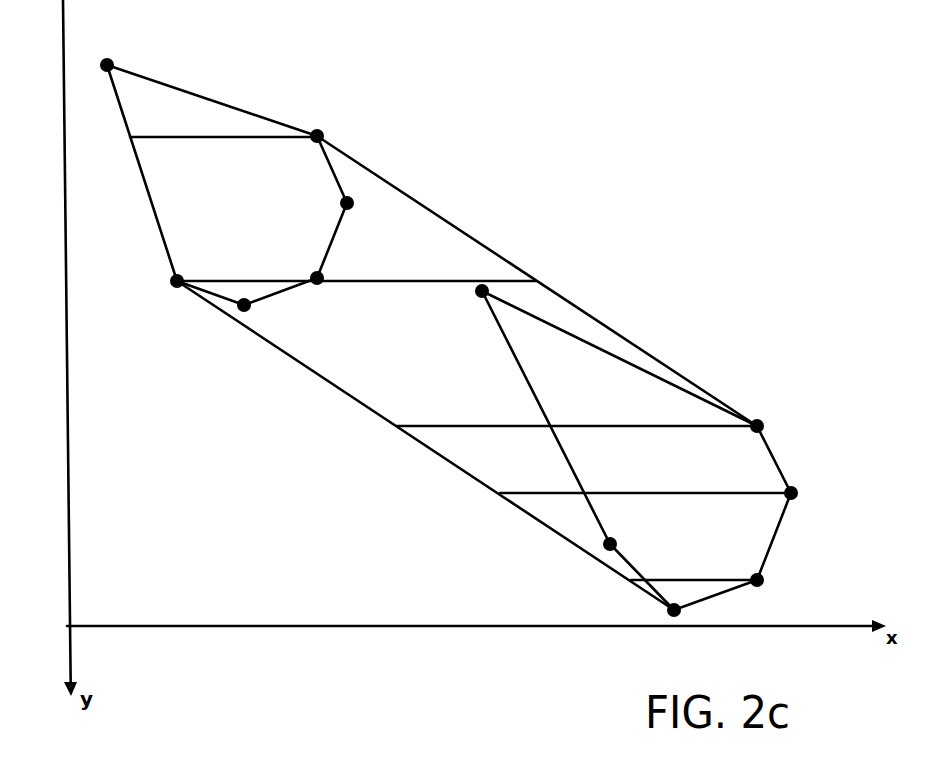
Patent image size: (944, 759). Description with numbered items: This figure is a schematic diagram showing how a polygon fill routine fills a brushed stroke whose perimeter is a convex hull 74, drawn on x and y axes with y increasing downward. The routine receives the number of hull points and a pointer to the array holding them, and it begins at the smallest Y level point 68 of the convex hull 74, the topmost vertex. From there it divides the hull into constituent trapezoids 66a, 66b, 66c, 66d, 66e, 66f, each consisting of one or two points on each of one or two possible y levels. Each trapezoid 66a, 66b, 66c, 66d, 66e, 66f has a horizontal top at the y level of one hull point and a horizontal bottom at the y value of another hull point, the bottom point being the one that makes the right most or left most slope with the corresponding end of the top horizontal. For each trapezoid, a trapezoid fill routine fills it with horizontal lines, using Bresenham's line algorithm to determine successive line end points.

The convex hull 74 is at (516, 93).
The smallest Y level point 68 is at (112, 60).
The trapezoid 66a is at (237, 108).
The trapezoid 66b is at (468, 234).
The trapezoid 66c is at (652, 357).
The trapezoid 66d is at (778, 465).
The trapezoid 66e is at (772, 547).
The trapezoid 66f is at (710, 598).